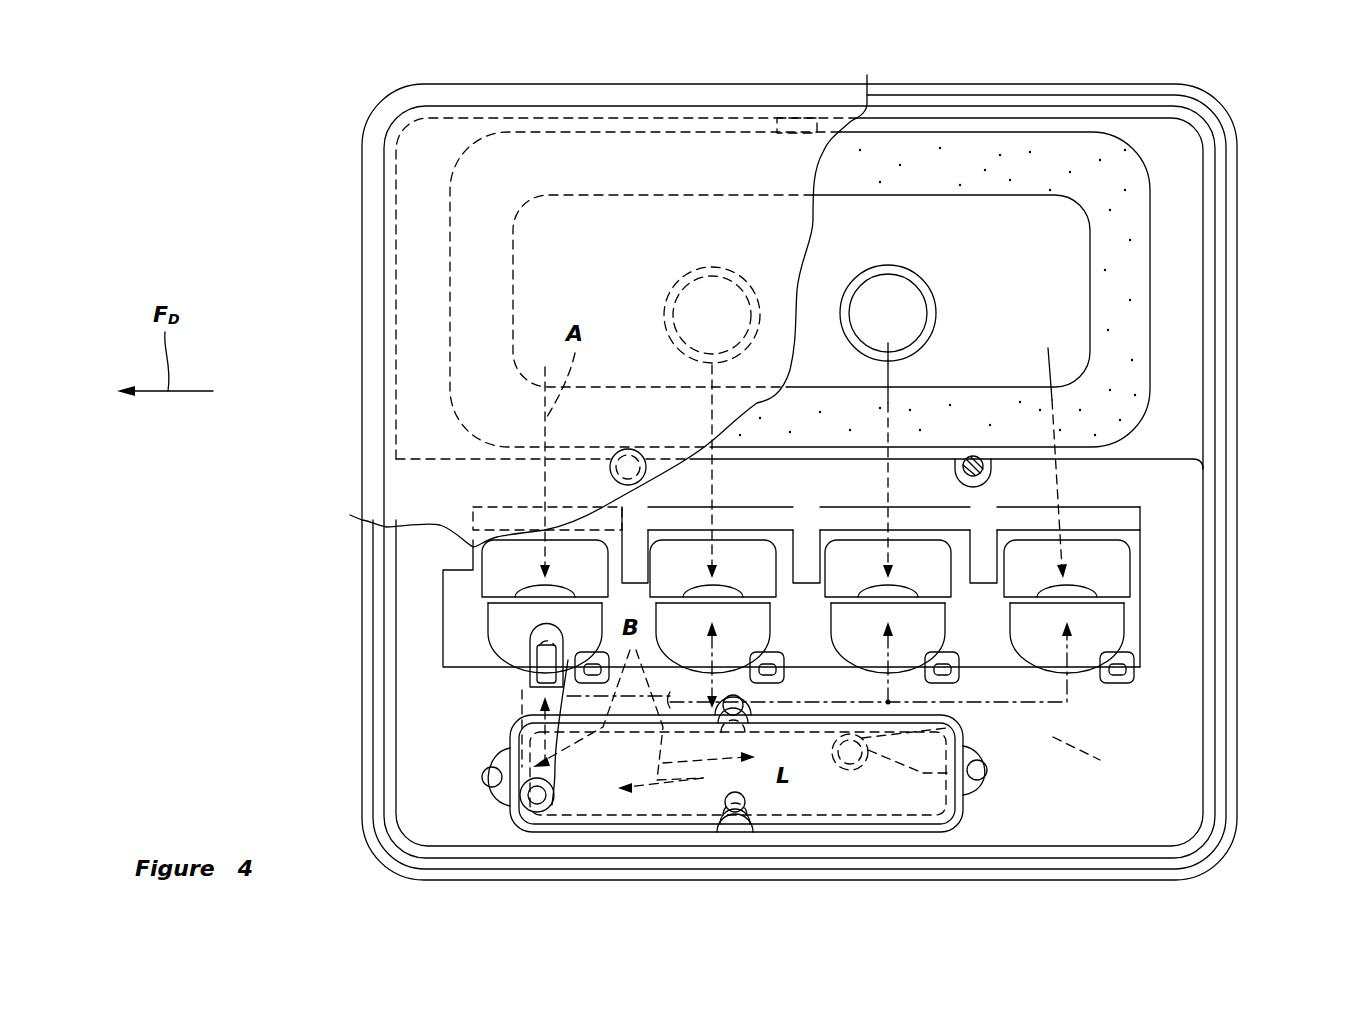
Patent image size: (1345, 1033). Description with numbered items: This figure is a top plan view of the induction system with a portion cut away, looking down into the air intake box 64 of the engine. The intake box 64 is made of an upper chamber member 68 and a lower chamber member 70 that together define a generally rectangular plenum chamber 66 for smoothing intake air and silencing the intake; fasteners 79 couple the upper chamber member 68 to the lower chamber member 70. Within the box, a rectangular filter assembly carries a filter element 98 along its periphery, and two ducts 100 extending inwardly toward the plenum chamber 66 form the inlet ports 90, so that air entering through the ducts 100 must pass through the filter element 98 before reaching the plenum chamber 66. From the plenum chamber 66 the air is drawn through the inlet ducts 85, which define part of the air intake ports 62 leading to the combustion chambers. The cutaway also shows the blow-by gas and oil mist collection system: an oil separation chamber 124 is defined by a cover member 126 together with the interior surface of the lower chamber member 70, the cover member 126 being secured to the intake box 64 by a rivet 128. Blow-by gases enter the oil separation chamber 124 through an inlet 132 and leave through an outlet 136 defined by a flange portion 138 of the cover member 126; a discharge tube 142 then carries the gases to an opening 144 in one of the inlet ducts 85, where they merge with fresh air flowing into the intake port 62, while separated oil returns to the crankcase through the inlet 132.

The air intake box 64 is at (1239, 233).
The lower chamber member 70 is at (1236, 295).
The plenum chamber 66 is at (1192, 757).
The upper chamber member 68 is at (415, 305).
The filter element 98 is at (1140, 350).
The duct 100 is at (670, 290).
The inlet port 90 is at (737, 343).
The fastener 79 is at (978, 453).
The air intake port 62 is at (537, 583).
The inlet duct 85 is at (488, 605).
The opening 144 is at (530, 632).
The discharge tube 142 is at (510, 688).
The inlet 132 is at (533, 795).
The oil separation chamber 124 is at (980, 770).
The cover member 126 is at (925, 803).
The rivet 128 is at (993, 770).
The outlet 136 is at (860, 763).
The flange portion 138 is at (958, 722).